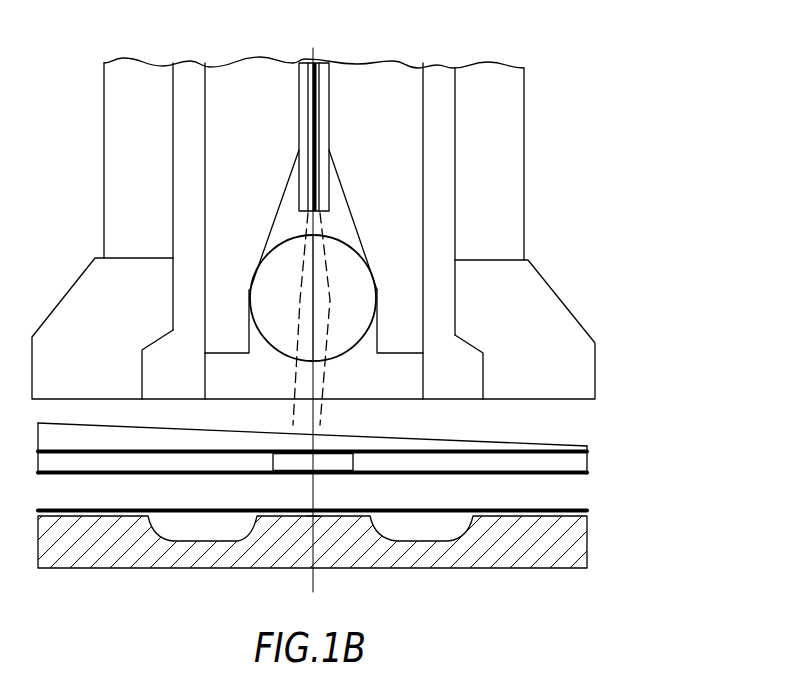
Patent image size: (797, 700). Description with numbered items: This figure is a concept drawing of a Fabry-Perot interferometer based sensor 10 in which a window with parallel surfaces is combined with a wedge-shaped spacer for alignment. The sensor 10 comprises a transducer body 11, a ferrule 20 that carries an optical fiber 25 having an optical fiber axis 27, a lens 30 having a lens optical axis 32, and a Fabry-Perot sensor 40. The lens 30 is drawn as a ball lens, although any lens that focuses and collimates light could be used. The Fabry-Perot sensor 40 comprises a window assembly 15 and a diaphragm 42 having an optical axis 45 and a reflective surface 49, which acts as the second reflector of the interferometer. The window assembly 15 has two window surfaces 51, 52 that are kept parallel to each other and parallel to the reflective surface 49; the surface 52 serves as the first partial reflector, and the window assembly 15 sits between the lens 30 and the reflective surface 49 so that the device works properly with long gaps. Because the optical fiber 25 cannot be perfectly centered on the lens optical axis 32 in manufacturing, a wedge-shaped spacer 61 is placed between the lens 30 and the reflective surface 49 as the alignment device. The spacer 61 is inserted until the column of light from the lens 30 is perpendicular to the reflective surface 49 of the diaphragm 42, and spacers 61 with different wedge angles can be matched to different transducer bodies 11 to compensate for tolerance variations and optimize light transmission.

The Fabry-Perot interferometer based sensor 10 is at (558, 188).
The transducer body 11 is at (578, 318).
The window assembly 15 is at (281, 452).
The ferrule 20 is at (423, 103).
The optical fiber 25 is at (331, 89).
The optical fiber axis 27 is at (316, 228).
The lens 30 is at (370, 270).
The lens optical axis 32 is at (313, 318).
The Fabry-Perot sensor 40 is at (576, 425).
The diaphragm 42 is at (588, 539).
The optical axis 45 is at (314, 577).
The reflective surface 49 is at (304, 518).
The window surface 51 is at (342, 453).
The first reflective surface 52 is at (289, 473).
The wedge-shaped spacer 61 is at (143, 426).